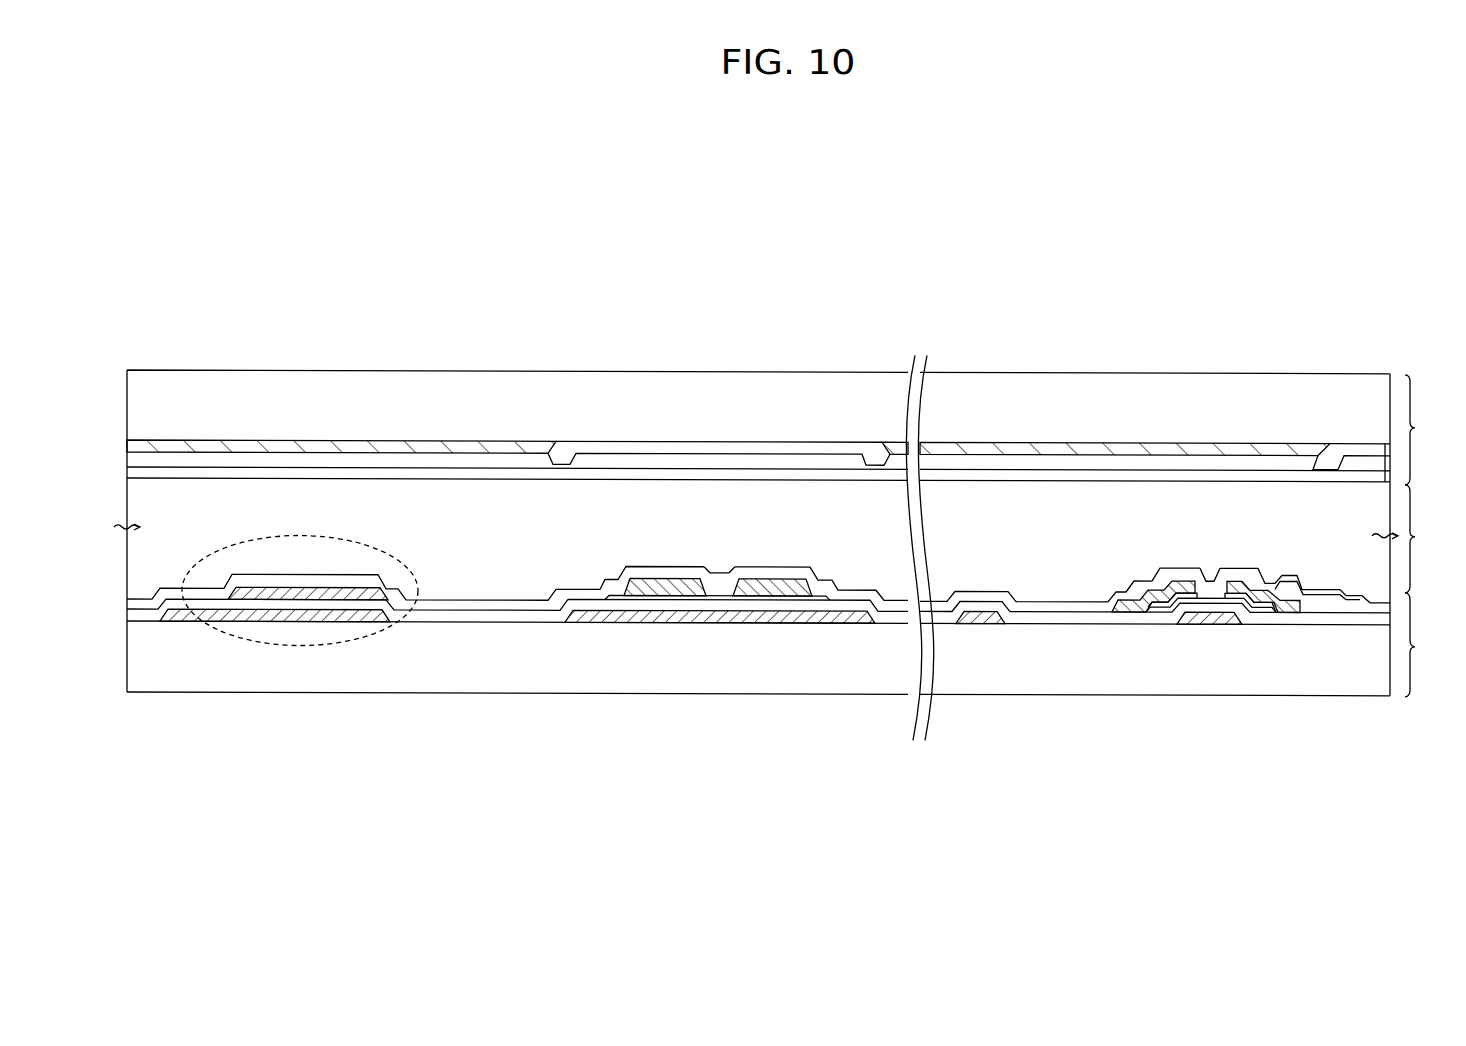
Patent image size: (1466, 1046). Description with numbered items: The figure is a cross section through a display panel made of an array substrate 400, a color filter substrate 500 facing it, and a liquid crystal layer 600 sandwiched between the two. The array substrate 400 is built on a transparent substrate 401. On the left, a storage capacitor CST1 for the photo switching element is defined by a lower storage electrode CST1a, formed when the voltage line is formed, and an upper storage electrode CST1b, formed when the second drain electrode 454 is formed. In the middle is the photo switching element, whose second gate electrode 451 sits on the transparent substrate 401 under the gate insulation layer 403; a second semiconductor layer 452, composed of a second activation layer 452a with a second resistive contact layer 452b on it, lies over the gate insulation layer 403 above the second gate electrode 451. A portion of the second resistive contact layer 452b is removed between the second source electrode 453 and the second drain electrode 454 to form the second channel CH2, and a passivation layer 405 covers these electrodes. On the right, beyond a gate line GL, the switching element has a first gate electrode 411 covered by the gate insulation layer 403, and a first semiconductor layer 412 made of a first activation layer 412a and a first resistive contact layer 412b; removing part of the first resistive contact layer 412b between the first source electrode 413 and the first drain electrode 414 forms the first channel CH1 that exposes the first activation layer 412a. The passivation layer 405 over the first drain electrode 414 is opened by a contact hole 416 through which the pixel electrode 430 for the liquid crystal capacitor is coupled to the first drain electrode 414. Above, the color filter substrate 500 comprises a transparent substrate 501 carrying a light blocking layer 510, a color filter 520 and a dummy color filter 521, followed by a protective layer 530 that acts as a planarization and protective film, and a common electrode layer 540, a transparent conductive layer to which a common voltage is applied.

The transparent substrate 501 is at (520, 396).
The light blocking layer 510 is at (331, 447).
The color filter 520 is at (1378, 436).
The dummy color filter 521 is at (727, 445).
The protective layer 530 is at (266, 457).
The common electrode layer 540 is at (200, 473).
The color filter substrate 500 is at (1430, 430).
The liquid crystal layer 600 is at (785, 537).
The array substrate 400 is at (1430, 645).
The transparent substrate 401 is at (515, 665).
The gate insulation layer 403 is at (153, 613).
The passivation layer 405 is at (142, 605).
The storage capacitor for a photo switching element CST1 is at (373, 628).
The lower storage electrode CST1a is at (271, 675).
The upper storage electrode CST1b is at (350, 597).
The second gate electrode 451 is at (590, 621).
The second semiconductor layer 452 is at (719, 679).
The second activation layer 452a is at (687, 596).
The second resistive contact layer 452b is at (747, 594).
The second source electrode 453 is at (640, 594).
The second drain electrode 454 is at (800, 590).
The second channel CH2 is at (717, 585).
The gate line GL is at (980, 622).
The first gate electrode 411 is at (1207, 615).
The first semiconductor layer 412 is at (1181, 687).
The first activation layer 412a is at (1165, 614).
The first resistive contact layer 412b is at (1150, 612).
The first source electrode 413 is at (1125, 610).
The first drain electrode 414 is at (1297, 614).
The contact hole 416 is at (1322, 583).
The pixel electrode 430 is at (1378, 600).
The first channel CH1 is at (1209, 580).